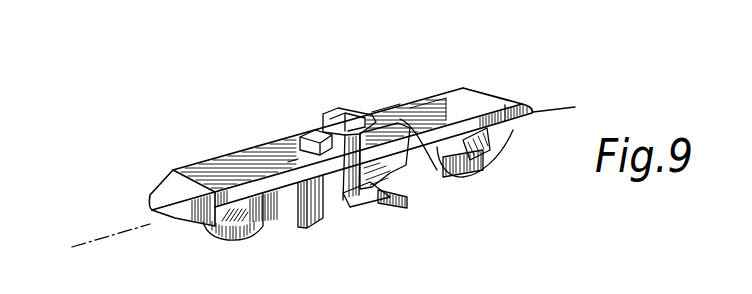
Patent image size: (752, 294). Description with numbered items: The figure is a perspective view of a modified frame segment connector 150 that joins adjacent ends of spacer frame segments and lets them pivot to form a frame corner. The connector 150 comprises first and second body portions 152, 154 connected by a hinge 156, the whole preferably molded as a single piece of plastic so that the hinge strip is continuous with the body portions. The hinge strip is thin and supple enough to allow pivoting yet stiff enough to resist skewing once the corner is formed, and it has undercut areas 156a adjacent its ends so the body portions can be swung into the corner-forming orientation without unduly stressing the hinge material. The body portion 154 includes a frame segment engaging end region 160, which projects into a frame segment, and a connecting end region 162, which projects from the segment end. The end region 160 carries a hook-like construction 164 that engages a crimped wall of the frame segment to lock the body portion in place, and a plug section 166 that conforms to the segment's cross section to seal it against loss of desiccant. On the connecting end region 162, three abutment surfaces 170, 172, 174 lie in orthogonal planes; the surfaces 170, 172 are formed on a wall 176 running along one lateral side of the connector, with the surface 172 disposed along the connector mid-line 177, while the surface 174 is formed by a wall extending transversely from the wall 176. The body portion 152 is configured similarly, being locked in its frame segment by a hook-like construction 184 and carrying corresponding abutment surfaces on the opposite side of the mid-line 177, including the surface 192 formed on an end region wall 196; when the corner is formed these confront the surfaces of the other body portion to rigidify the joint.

The frame segment connector 150 is at (434, 50).
The first body portion 152 is at (202, 156).
The second body portion 154 is at (401, 100).
The hinge 156 is at (343, 208).
The undercut areas 156a is at (383, 202).
The frame segment engaging end region 160 is at (488, 110).
The connecting end region 162 is at (420, 204).
The hook-like construction 164 is at (505, 175).
The plug section 166 is at (384, 107).
The abutment surface 170 is at (322, 123).
The abutment surface 172 is at (384, 156).
The abutment surface 174 is at (421, 119).
The wall 176 is at (375, 113).
The mid-line 177 is at (100, 232).
The hook-like construction 184 is at (221, 242).
The abutment surface 192 is at (296, 150).
The end region wall 196 is at (323, 188).